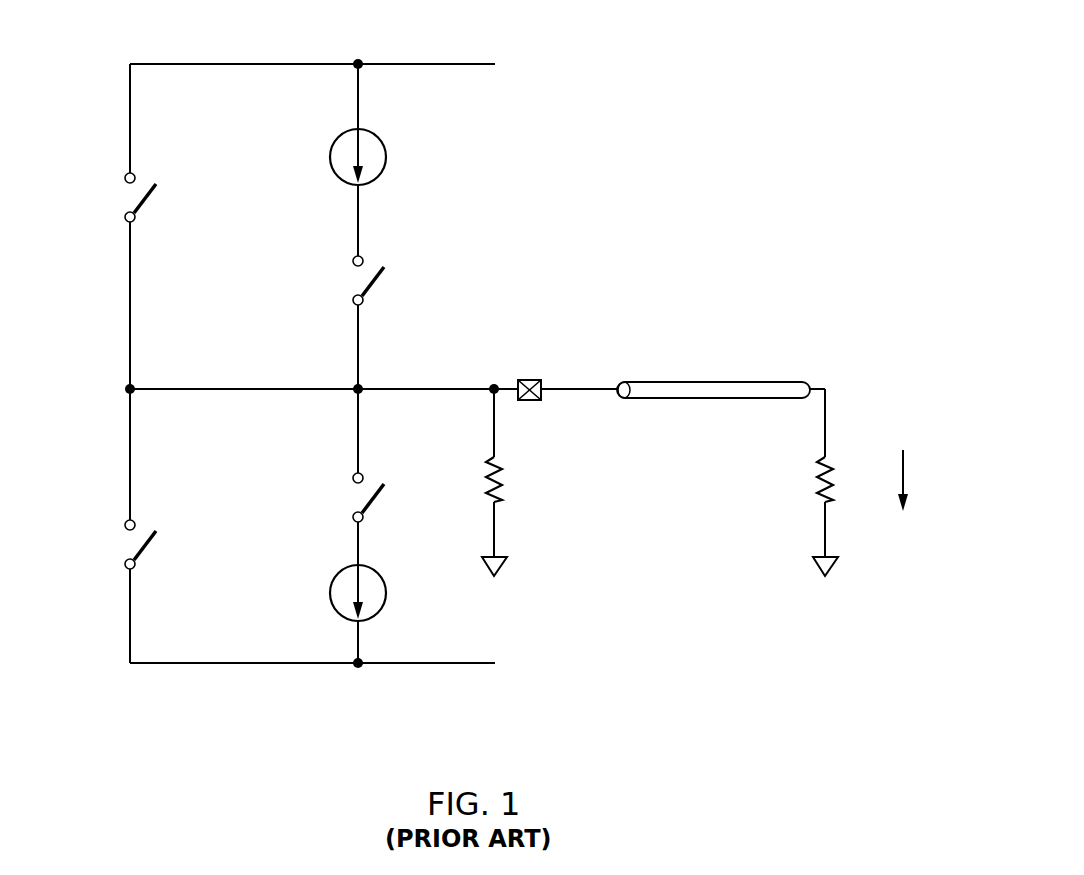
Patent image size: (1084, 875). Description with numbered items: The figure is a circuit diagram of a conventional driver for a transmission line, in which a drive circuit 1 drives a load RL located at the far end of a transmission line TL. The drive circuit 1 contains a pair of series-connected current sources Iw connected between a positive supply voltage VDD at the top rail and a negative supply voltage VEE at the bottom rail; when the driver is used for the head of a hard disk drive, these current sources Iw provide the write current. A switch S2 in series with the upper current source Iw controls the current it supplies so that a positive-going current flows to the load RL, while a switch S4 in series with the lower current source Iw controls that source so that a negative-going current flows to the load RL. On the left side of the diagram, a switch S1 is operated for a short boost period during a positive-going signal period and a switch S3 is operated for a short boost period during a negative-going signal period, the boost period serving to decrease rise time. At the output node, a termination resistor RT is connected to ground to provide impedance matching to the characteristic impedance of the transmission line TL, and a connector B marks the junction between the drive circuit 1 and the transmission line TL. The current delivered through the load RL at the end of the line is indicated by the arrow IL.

The drive circuit 1 is at (510, 364).
The switch S1 is at (121, 197).
The switch S2 is at (387, 280).
The switch S3 is at (121, 544).
The switch S4 is at (387, 497).
The current source Iw is at (378, 375).
The positive supply voltage VDD is at (444, 45).
The negative supply voltage VEE is at (442, 682).
The connector B is at (524, 373).
The transmission line TL is at (721, 386).
The termination resistor RT is at (509, 482).
The load RL is at (840, 482).
The load current IL is at (916, 480).